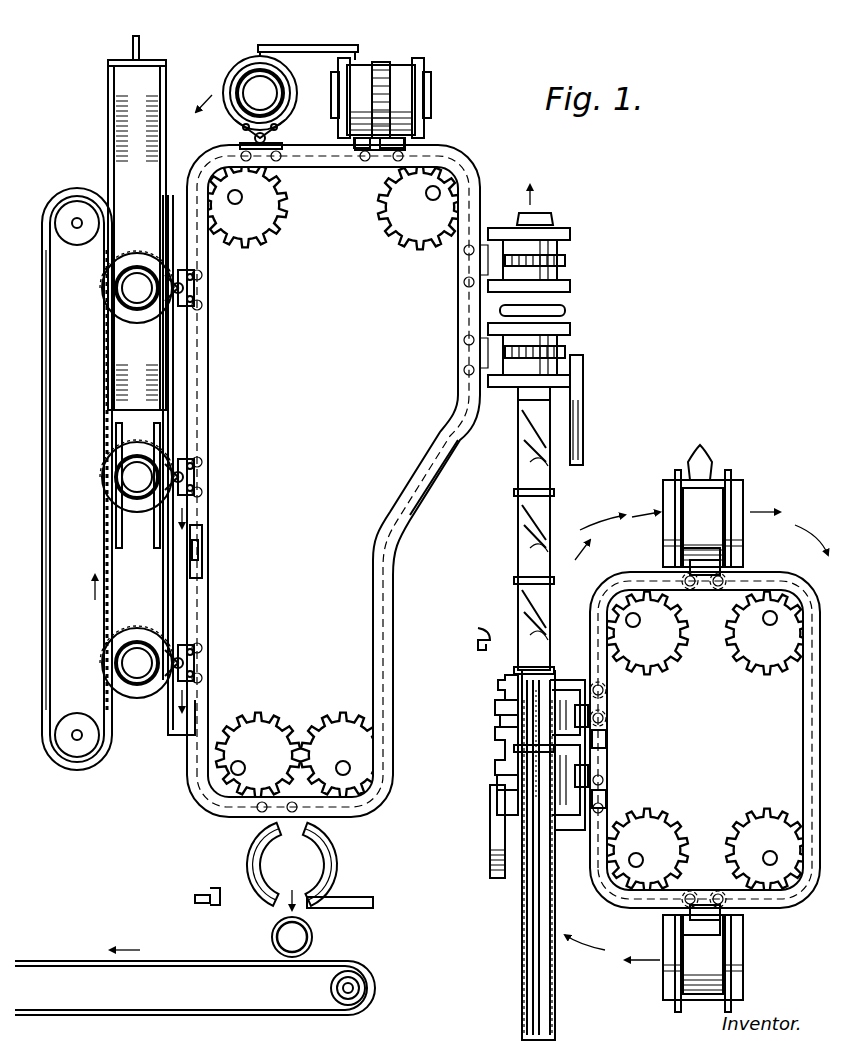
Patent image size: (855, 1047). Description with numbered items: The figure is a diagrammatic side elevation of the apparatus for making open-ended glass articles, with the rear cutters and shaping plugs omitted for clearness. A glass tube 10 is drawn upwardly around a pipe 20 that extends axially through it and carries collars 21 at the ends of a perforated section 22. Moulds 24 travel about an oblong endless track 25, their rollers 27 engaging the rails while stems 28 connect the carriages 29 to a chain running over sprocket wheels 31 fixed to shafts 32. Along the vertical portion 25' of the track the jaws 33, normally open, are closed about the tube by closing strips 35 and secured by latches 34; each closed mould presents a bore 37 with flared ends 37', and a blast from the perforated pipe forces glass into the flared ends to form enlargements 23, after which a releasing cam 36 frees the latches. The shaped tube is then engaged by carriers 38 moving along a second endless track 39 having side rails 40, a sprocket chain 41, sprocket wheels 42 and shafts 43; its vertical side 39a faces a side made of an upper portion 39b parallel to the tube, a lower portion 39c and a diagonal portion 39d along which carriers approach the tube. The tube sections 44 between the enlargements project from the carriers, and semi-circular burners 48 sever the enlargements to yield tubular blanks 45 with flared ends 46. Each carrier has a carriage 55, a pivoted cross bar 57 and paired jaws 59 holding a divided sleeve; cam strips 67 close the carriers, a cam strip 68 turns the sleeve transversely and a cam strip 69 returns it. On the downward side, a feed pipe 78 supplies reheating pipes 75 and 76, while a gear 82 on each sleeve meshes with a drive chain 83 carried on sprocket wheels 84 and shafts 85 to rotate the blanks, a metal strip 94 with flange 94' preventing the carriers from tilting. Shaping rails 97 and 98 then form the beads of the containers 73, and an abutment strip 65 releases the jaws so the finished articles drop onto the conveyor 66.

The glass tube 10 is at (522, 982).
The pipe 20 is at (536, 1005).
The collars 21 is at (540, 690).
The perforated section 22 is at (518, 722).
The enlargements 23 is at (520, 402).
The moulds 24 is at (744, 505).
The endless track 25 is at (705, 723).
The vertical track section 25' is at (638, 680).
The rollers 27 is at (716, 588).
The stems 28 is at (703, 560).
The carriages 29 is at (580, 705).
The sprocket wheels 31 is at (745, 622).
The shafts 32 is at (633, 613).
The jaws 33 is at (571, 334).
The latches 34 is at (500, 692).
The closing strips 35 is at (492, 840).
The releasing cam 36 is at (478, 636).
The bore 37 is at (479, 757).
The flared ends 37' is at (479, 810).
The carriers 38 is at (392, 62).
The endless track 39 is at (483, 190).
The vertical side portion 39a is at (208, 385).
The upper portion 39b is at (463, 292).
The lower portion 39c is at (375, 605).
The diagonally extending portion 39d is at (428, 483).
The side rails 40 is at (203, 565).
The sprocket chain 41 is at (200, 548).
The sprocket wheels 42 is at (262, 218).
The shafts 43 is at (236, 204).
The tube sections 44 is at (523, 463).
The tubular blank 45 is at (255, 88).
The flared ends 46 is at (336, 92).
The burners 48 is at (566, 310).
The carriage 55 is at (385, 148).
The cross bar 57 is at (358, 148).
The jaws 59 is at (228, 86).
The abutment strip 65 is at (208, 902).
The conveyor 66 is at (298, 1012).
The cam strips 67 is at (584, 418).
The cam strip 68 is at (330, 46).
The cam strip 69 is at (374, 902).
The container 73 is at (313, 936).
The pipes 75 is at (108, 108).
The pipes 76 is at (166, 168).
The feed pipe 78 is at (140, 47).
The gear 82 is at (380, 62).
The drive chain 83 is at (48, 410).
The sprocket wheels 84 is at (60, 212).
The shafts 85 is at (77, 218).
The metal strip 94 is at (214, 465).
The flange 94' is at (214, 437).
The shaping rails 97 is at (118, 545).
The shaping rails 98 is at (156, 545).